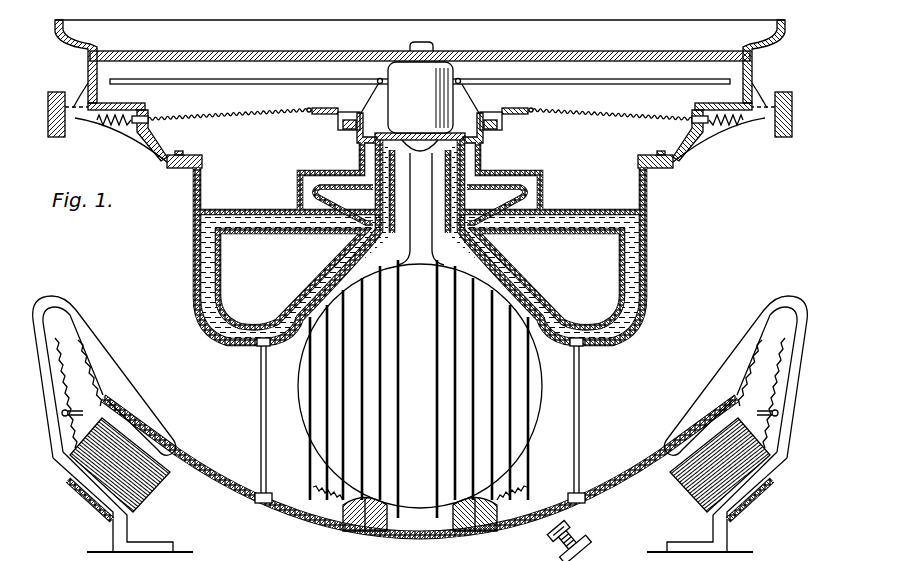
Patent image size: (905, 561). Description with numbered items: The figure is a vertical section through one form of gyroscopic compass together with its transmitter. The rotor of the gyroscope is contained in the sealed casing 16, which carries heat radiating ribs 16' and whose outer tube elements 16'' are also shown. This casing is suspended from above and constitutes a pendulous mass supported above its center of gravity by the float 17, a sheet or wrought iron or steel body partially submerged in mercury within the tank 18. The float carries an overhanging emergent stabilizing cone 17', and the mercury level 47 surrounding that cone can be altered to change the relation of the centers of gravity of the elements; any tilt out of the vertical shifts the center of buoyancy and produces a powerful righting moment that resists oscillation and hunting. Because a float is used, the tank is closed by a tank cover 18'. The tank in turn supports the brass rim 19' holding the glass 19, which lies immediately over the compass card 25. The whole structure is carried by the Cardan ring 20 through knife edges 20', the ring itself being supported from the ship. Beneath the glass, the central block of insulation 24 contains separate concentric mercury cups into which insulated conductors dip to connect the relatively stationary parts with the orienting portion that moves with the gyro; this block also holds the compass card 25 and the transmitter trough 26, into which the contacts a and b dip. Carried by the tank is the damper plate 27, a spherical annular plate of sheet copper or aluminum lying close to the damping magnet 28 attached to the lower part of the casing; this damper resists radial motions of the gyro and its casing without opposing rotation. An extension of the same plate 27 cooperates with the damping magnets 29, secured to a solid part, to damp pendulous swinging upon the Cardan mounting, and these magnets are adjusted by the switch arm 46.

The casing 16 is at (433, 330).
The ribs 16' is at (418, 389).
The outer tube electrodes 16'' is at (402, 408).
The float 17 is at (420, 279).
The stabilizing cone 17' is at (420, 205).
The tank 18 is at (421, 241).
The tank cover 18' is at (419, 176).
The glass 19 is at (420, 40).
The rim 19' is at (420, 94).
The Cardan ring 20 is at (421, 99).
The knife edges 20' is at (417, 126).
The central block of insulation 24 is at (420, 96).
The compass card 25 is at (602, 82).
The transmitter trough 26 is at (500, 130).
The damper plate 27 is at (230, 478).
The damping magnet 28 is at (506, 513).
The damping magnets 29 is at (90, 501).
The switch arm 46 is at (420, 393).
The level of the mercury 47 is at (312, 222).
The contact a is at (346, 112).
The contact b is at (497, 112).